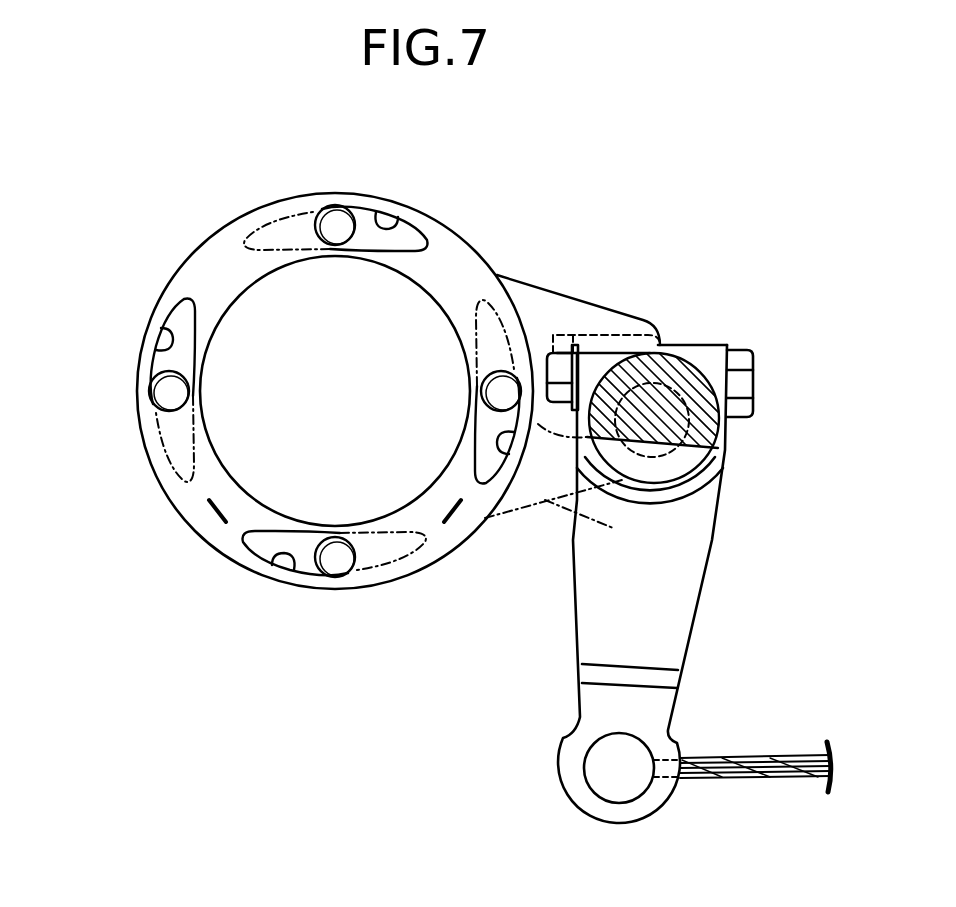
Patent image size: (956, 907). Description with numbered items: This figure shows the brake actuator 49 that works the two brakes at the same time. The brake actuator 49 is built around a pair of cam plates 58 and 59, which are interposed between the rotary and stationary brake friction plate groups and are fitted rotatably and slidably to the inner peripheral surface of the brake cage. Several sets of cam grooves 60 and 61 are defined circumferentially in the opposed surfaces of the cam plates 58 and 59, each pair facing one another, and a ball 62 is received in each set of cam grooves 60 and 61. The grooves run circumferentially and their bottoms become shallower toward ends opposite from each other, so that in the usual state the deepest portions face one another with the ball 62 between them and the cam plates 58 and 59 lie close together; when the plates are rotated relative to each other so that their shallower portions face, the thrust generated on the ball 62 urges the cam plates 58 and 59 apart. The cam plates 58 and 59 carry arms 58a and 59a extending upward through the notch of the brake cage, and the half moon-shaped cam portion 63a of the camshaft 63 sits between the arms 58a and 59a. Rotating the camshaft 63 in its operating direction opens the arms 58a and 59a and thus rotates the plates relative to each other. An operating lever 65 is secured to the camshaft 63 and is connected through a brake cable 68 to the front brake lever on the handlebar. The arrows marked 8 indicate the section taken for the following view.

The brake actuator 49 is at (500, 234).
The cam plate 58 is at (208, 263).
The arm 58a is at (544, 313).
The cam plate 59 is at (193, 502).
The arm 59a is at (571, 496).
The cam groove 60 is at (397, 222).
The cam groove 61 is at (277, 225).
The ball 62 is at (335, 226).
The camshaft 63 is at (700, 419).
The cam portion 63a is at (697, 345).
The operating lever 65 is at (658, 590).
The brake cable 68 is at (740, 768).
The section line 8- 8 is at (206, 535).